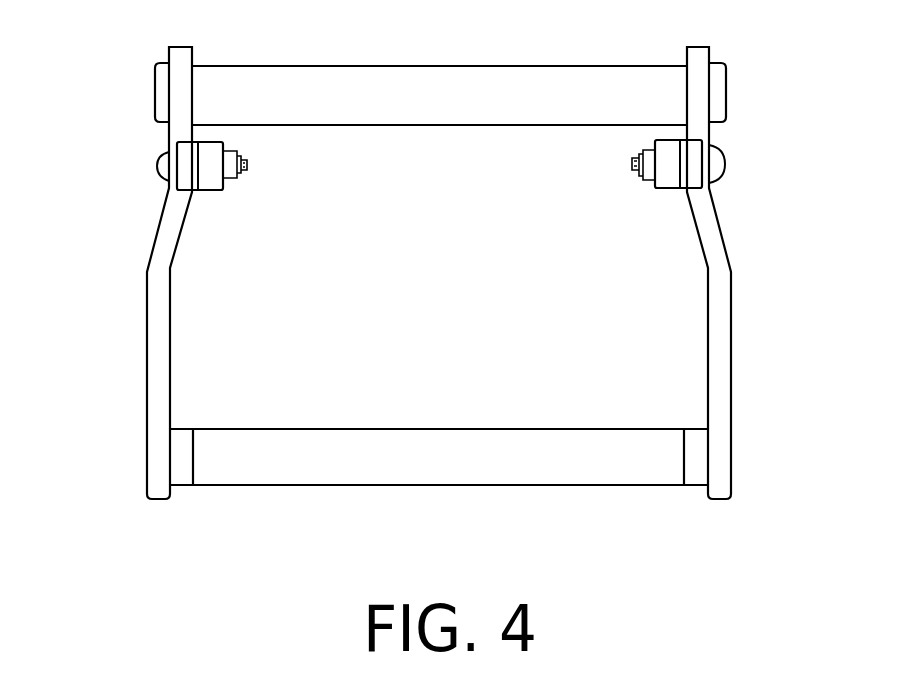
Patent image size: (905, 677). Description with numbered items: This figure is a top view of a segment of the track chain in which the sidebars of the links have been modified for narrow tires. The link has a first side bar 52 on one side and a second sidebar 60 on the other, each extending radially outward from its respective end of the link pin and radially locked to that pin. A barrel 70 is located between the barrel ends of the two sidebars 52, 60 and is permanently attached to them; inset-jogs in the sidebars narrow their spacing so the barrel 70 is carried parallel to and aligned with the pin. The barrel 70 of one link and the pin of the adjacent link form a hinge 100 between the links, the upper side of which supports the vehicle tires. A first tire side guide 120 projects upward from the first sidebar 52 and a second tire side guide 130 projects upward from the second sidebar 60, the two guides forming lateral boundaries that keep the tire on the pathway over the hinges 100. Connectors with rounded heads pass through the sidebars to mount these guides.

The first side bar 52 is at (727, 245).
The second sidebar 60 is at (153, 247).
The barrel 70 is at (445, 85).
The hinge 100 is at (428, 438).
The first tire side guide 120 is at (675, 180).
The second tire side guide 130 is at (210, 180).